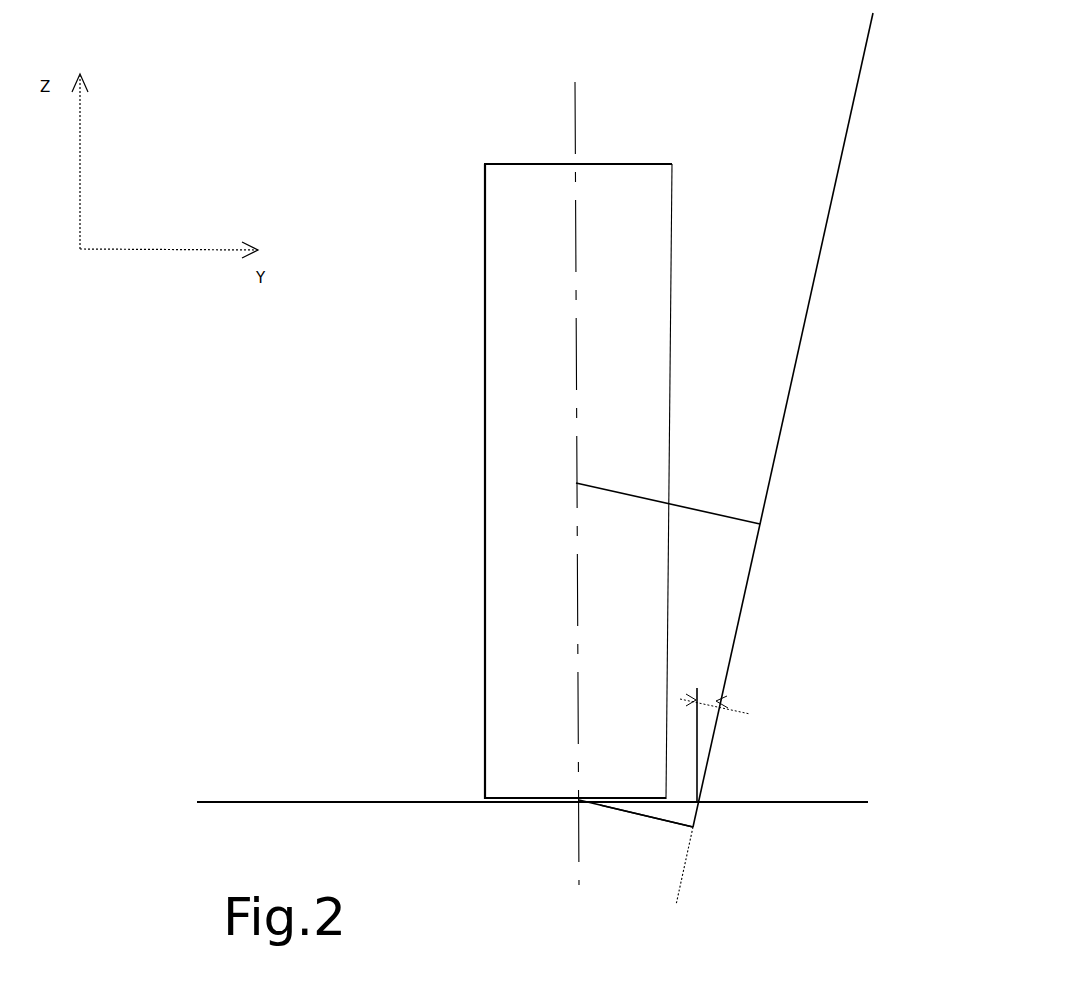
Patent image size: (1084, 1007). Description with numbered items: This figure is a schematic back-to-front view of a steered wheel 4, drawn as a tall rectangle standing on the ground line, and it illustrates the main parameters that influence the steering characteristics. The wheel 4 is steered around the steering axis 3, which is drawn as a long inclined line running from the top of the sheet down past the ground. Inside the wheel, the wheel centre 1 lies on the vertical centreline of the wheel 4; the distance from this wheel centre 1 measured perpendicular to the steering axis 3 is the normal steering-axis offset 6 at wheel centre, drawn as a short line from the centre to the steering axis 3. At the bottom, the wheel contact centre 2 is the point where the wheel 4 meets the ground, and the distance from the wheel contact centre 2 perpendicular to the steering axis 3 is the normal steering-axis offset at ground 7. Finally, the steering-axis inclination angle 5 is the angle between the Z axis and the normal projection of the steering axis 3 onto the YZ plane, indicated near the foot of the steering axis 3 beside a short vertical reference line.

The wheel centre 1 is at (576, 483).
The wheel contact centre 2 is at (579, 800).
The steering axis 3 is at (851, 107).
The steered wheel 4 is at (483, 248).
The steering-axis inclination angle 5 is at (709, 697).
The normal steering-axis offset at wheel centre 6 is at (708, 512).
The normal steering-axis offset at ground 7 is at (657, 818).